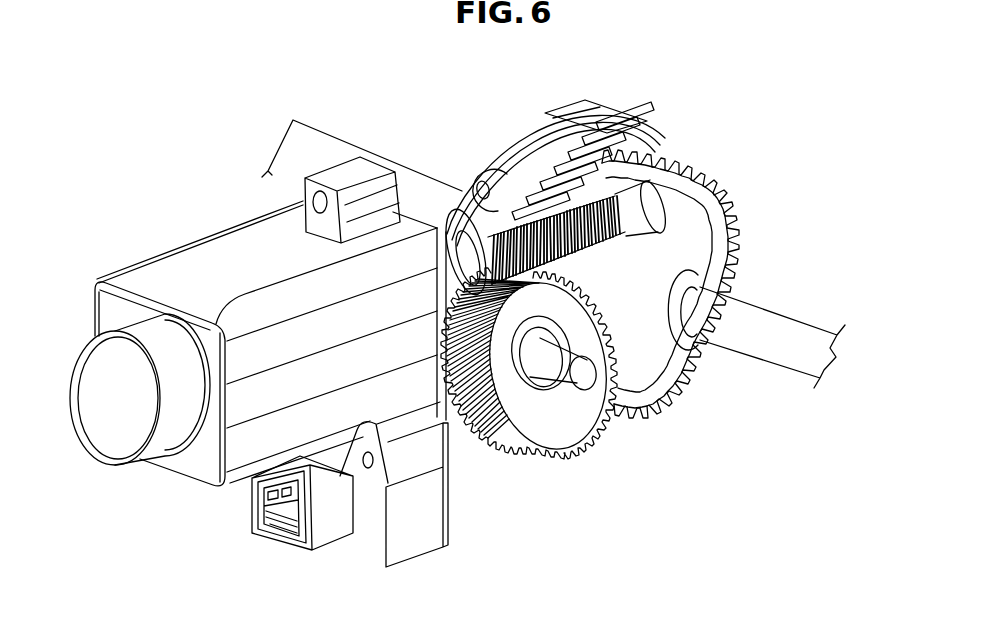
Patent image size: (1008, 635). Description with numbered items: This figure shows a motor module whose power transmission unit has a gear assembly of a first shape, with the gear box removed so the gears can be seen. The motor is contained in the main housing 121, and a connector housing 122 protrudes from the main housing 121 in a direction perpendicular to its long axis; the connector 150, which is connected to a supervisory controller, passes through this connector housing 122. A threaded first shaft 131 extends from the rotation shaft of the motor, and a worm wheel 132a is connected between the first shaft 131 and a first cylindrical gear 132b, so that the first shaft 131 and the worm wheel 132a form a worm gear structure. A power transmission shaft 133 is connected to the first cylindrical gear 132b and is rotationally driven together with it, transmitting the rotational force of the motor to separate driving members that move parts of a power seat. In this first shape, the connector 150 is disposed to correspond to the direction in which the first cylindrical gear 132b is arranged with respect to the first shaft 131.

The main housing 121 is at (210, 267).
The connector housing 122 is at (413, 537).
The first shaft 131 is at (513, 162).
The worm wheel 132a is at (533, 406).
The first cylindrical gear 132b is at (745, 242).
The power transmission shaft 133 is at (777, 350).
The connector 150 is at (280, 541).